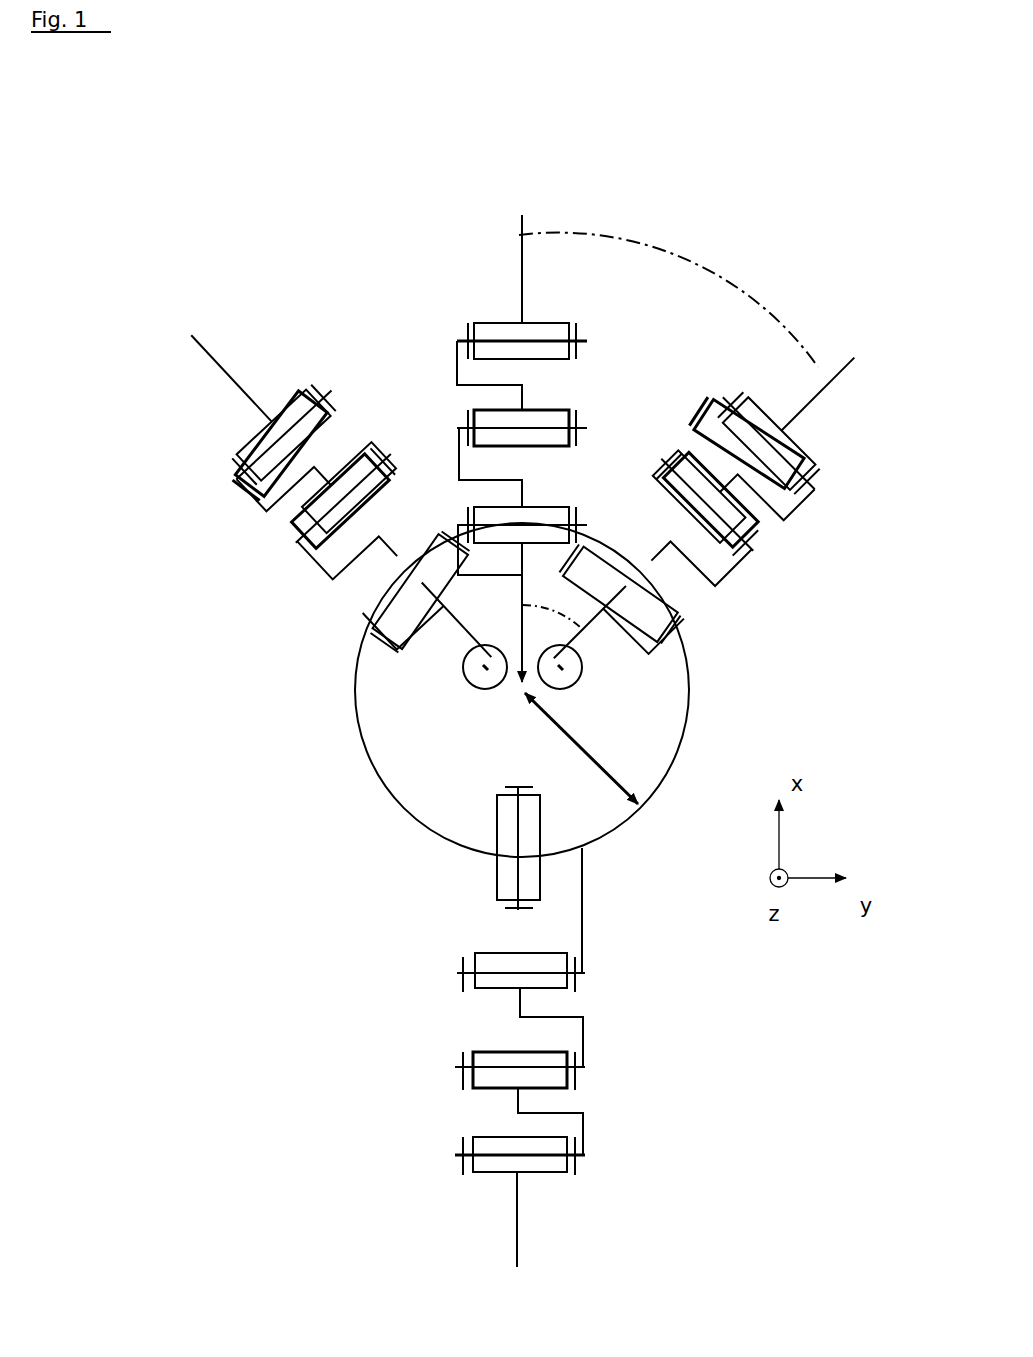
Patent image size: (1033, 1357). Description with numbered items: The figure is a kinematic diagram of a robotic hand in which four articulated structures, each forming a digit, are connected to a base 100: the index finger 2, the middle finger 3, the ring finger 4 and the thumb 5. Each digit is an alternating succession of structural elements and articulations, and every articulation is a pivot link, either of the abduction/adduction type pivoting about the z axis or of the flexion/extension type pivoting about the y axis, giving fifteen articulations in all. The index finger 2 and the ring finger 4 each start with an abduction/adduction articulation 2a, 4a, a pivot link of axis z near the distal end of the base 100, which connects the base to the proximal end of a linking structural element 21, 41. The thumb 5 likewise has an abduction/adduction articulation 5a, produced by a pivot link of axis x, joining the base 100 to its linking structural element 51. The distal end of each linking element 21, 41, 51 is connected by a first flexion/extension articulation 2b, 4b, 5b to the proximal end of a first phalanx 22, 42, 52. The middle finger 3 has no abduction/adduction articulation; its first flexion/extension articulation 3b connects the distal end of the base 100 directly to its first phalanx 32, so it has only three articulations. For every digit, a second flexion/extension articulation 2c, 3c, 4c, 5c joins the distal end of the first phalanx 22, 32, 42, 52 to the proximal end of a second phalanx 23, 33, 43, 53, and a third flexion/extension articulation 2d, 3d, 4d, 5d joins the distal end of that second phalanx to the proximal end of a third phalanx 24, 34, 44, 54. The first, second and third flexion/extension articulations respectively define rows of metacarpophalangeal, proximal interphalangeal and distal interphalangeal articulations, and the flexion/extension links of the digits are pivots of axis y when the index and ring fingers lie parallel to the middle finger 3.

The base 100 is at (503, 698).
The index finger 2 is at (250, 358).
The middle finger 3 is at (421, 222).
The ring finger 4 is at (893, 357).
The thumb 5 is at (398, 1196).
The abduction/adduction articulation 2a is at (457, 694).
The first flexion/extension articulation 2b is at (396, 601).
The second flexion/extension articulation 2c is at (325, 511).
The third flexion/extension articulation 2d is at (260, 444).
The linking structural element 21 is at (383, 644).
The first phalanx 22 is at (323, 577).
The second phalanx 23 is at (249, 509).
The third phalanx 24 is at (186, 406).
The first flexion/extension articulation 3b is at (527, 504).
The second flexion/extension articulation 3c is at (496, 422).
The third flexion/extension articulation 3d is at (491, 331).
The first phalanx 32 is at (469, 467).
The second phalanx 33 is at (458, 375).
The third phalanx 34 is at (484, 269).
The abduction/adduction articulation 4a is at (589, 691).
The first flexion/extension articulation 4b is at (651, 596).
The second flexion/extension articulation 4c is at (732, 503).
The third flexion/extension articulation 4d is at (778, 443).
The linking structural element 41 is at (644, 641).
The first phalanx 42 is at (732, 568).
The second phalanx 43 is at (797, 495).
The third phalanx 44 is at (858, 403).
The abduction/adduction articulation 5a is at (595, 848).
The first flexion/extension articulation 5b is at (575, 980).
The second flexion/extension articulation 5c is at (573, 1078).
The third flexion/extension articulation 5d is at (579, 1161).
The linking structural element 51 is at (608, 910).
The first phalanx 52 is at (582, 1027).
The second phalanx 53 is at (585, 1121).
The third phalanx 54 is at (585, 1219).